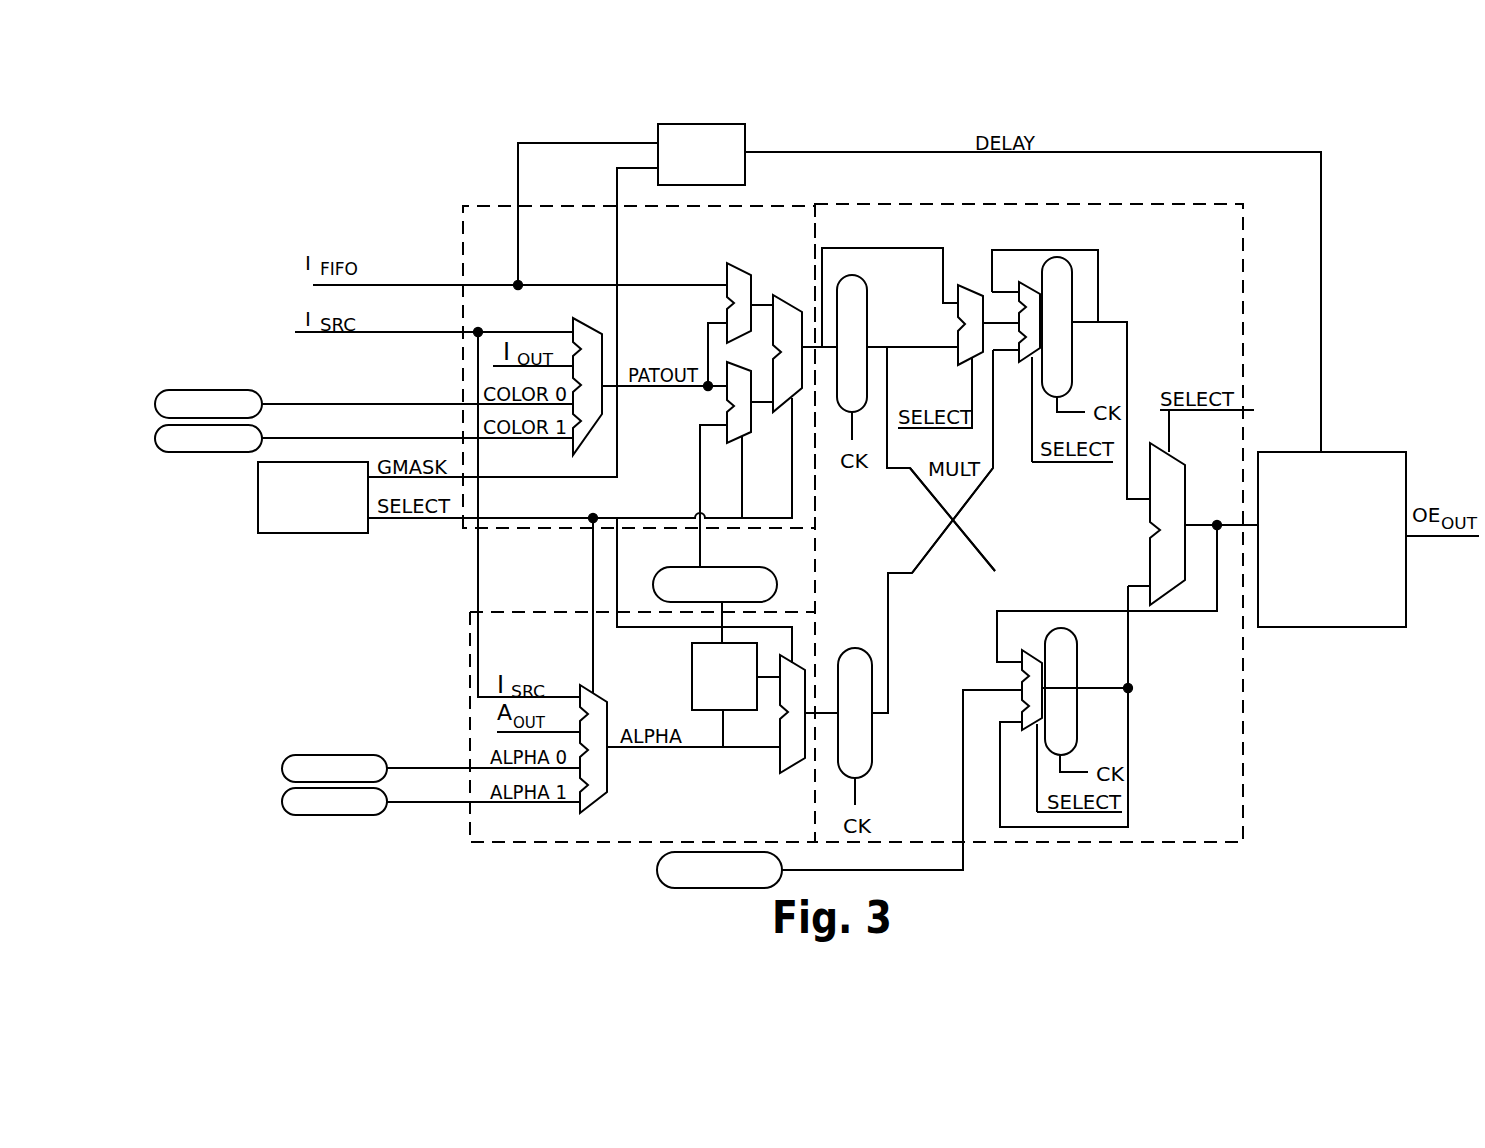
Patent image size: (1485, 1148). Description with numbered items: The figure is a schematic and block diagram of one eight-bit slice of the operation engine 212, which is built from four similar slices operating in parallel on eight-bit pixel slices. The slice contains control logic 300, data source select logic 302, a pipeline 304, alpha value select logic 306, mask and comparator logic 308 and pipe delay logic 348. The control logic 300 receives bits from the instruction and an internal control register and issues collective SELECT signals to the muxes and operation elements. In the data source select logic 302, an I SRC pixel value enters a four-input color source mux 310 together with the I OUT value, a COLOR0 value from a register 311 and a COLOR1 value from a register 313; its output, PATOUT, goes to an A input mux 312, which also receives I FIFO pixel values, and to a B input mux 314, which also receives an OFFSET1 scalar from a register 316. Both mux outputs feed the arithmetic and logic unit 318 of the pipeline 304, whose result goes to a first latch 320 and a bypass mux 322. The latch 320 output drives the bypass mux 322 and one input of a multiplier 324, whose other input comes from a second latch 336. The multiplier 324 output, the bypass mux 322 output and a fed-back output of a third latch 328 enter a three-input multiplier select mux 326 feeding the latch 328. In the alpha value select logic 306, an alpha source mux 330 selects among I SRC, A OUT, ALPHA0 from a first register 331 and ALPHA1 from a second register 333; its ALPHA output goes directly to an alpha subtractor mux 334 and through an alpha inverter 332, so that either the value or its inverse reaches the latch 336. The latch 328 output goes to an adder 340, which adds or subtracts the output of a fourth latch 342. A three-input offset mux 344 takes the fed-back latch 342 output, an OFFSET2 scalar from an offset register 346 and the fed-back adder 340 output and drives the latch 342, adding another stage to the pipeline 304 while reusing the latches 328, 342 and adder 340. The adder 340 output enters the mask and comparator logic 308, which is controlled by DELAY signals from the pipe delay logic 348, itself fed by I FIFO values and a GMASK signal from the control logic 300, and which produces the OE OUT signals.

The operation engine 212 is at (277, 265).
The control logic 300 is at (312, 535).
The data source select logic 302 is at (462, 250).
The pipeline 304 is at (1243, 255).
The alpha value select logic 306 is at (467, 665).
The mask and comparator logic 308 is at (1345, 452).
The color source mux 310 is at (585, 322).
The register 311 is at (225, 390).
The A input mux 312 is at (737, 263).
The register 313 is at (232, 452).
The B input mux 314 is at (752, 420).
The register 316 is at (725, 567).
The arithmetic and logic unit 318 is at (784, 295).
The first latch 320 is at (868, 322).
The bypass mux 322 is at (966, 285).
The multiplier 324 is at (930, 498).
The multiplier select mux 326 is at (1030, 282).
The third latch 328 is at (1056, 257).
The alpha source mux 330 is at (610, 767).
The first register 331 is at (323, 755).
The alpha inverter 332 is at (690, 672).
The second register 333 is at (323, 815).
The alpha subtractor mux 334 is at (777, 763).
The second latch 336 is at (873, 742).
The adder 340 is at (1188, 508).
The fourth latch 342 is at (1078, 670).
The offset mux 344 is at (1033, 655).
The offset register 346 is at (688, 890).
The pipe delay logic 348 is at (745, 178).